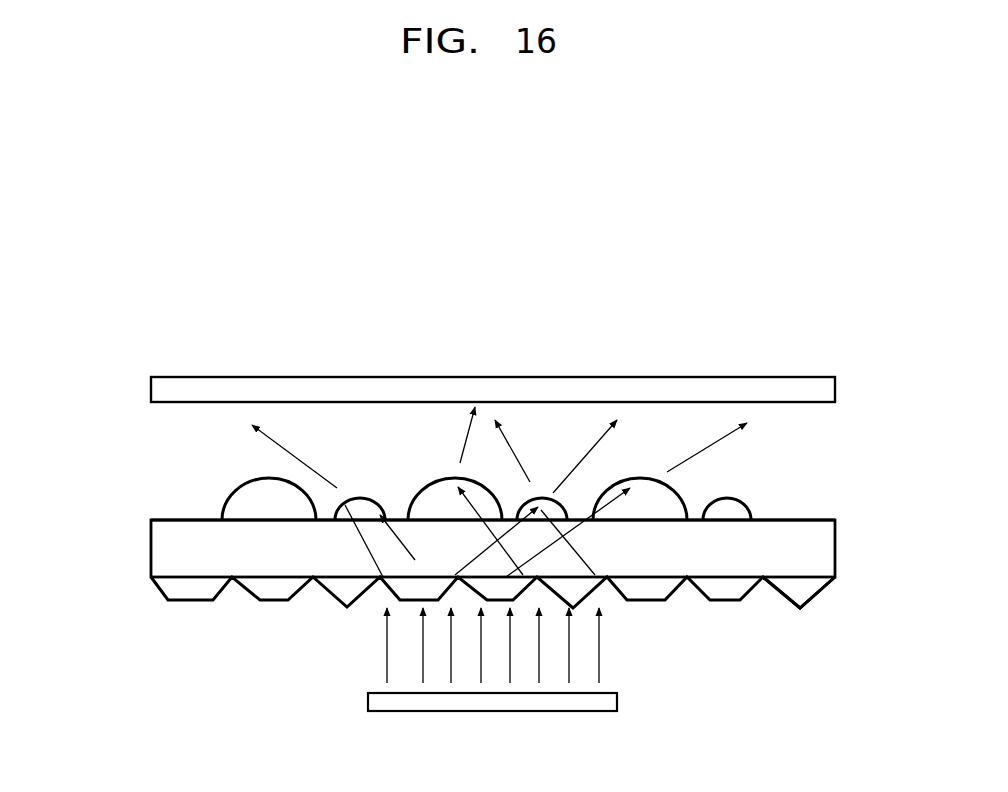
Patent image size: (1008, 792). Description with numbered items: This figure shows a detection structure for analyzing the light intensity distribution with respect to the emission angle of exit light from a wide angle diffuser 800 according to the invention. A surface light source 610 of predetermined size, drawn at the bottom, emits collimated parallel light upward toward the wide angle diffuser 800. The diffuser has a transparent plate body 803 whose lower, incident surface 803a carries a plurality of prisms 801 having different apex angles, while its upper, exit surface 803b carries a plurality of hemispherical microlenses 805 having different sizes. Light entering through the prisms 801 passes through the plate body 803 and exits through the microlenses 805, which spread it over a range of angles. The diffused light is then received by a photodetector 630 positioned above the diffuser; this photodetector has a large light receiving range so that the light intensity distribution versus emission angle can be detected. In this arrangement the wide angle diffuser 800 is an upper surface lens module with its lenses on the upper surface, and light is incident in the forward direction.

The photodetector 630 is at (157, 388).
The wide angle diffuser 800 is at (136, 500).
The light guide plate / base 803 is at (822, 548).
The exit surface 803b is at (813, 521).
The incident surface 803a is at (820, 590).
The hemispherical microlenses 805 is at (662, 497).
The prisms 801 is at (795, 593).
The surface light source 610 is at (368, 699).